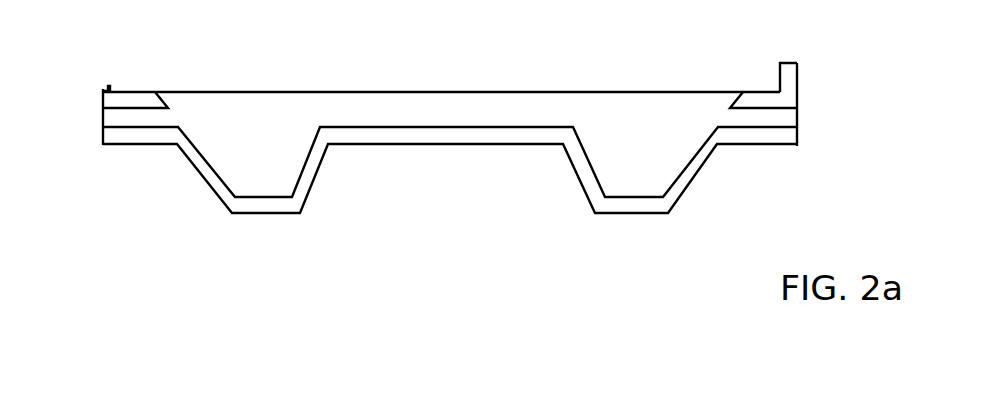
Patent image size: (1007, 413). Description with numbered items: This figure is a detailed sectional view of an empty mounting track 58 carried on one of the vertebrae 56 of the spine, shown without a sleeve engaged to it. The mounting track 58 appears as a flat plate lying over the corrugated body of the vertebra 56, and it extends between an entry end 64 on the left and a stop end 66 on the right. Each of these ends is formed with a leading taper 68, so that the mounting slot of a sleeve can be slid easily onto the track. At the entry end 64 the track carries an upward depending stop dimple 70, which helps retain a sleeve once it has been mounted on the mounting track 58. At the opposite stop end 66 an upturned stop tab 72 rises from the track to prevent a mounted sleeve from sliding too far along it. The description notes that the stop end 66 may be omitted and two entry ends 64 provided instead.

The vertebra 56 is at (450, 170).
The mounting track 58 is at (513, 92).
The entry end 64 is at (102, 118).
The stop end 66 is at (798, 118).
The leading taper 68 is at (109, 87).
The stop dimple 70 is at (112, 86).
The stop tab 72 is at (788, 78).